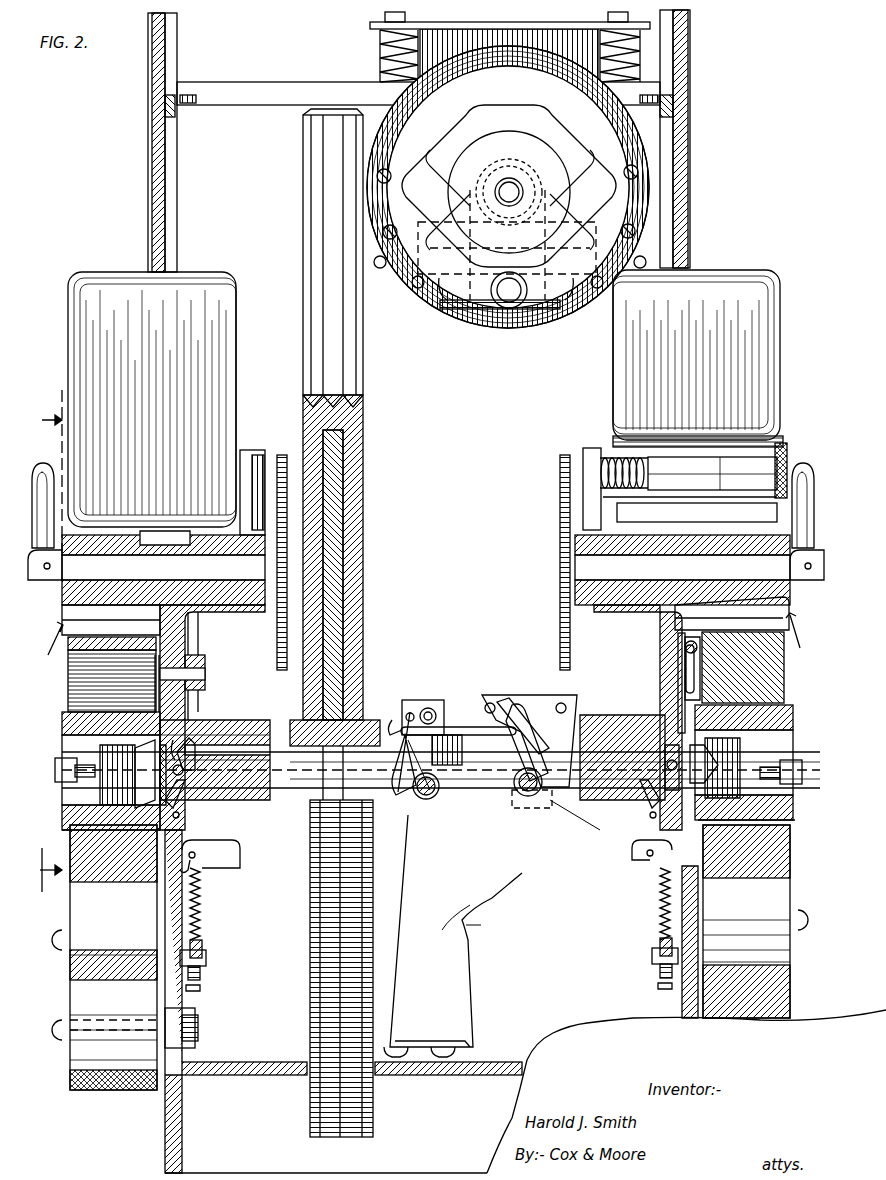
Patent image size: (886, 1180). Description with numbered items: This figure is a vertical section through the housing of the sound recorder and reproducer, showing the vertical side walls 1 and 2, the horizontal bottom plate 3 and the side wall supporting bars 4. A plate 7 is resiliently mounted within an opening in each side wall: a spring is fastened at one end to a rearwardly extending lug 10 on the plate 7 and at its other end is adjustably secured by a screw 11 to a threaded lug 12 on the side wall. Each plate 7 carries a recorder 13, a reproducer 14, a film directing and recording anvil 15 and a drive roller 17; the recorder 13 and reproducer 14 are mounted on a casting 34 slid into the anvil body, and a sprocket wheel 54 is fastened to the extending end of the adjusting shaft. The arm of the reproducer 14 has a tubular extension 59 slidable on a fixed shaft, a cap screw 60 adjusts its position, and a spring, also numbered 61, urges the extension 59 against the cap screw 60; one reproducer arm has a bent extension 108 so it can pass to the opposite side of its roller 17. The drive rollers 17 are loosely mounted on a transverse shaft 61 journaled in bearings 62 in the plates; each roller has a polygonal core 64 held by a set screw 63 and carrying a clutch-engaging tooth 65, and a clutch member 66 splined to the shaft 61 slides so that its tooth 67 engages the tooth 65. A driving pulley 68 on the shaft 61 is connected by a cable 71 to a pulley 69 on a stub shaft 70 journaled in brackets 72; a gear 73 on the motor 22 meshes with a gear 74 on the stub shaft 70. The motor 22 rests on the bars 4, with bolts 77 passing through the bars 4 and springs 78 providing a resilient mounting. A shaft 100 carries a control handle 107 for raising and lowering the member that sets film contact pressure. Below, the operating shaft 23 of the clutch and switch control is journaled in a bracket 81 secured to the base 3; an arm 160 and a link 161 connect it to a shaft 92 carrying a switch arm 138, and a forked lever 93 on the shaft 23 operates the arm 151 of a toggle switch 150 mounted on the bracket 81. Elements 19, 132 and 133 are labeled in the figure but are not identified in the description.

The side wall 1 is at (155, 158).
The side wall 2 is at (690, 142).
The bottom plate 3 is at (238, 1062).
The side wall supporting bars 4 is at (231, 82).
The plate 7 is at (186, 640).
The lug 10 is at (202, 852).
The screw 11 is at (200, 990).
The threaded lug 12 is at (204, 955).
The recorder 13 is at (160, 332).
The reproducer 14 is at (678, 676).
The anvil 15 is at (424, 643).
The drive roller 17 is at (62, 826).
The wheel 19 is at (70, 905).
The motor 22 is at (378, 188).
The operating shaft 23 is at (426, 800).
The casting 34 is at (252, 443).
The sprocket wheel 54 is at (282, 455).
The tubular extension 59 is at (684, 462).
The cap screw 60 is at (786, 440).
The shaft 61 is at (612, 456).
The bearings 62 is at (252, 730).
The set screw 63 is at (58, 776).
The polygonal core 64 is at (64, 738).
The clutch-engaging tooth 65 is at (140, 748).
The clutch member 66 is at (178, 722).
The tooth 67 is at (140, 806).
The driving pulley 68 is at (365, 536).
The pulley 69 is at (304, 232).
The stub shaft 70 is at (311, 280).
The cable 71 is at (364, 333).
The brackets 72 is at (442, 298).
The gear 73 is at (545, 185).
The gear 74 is at (555, 225).
The bolts 77 is at (628, 23).
The springs 78 is at (380, 56).
The bracket 81 is at (472, 903).
The shaft 92 is at (520, 792).
The forked lever 93 is at (436, 757).
The shaft 100 is at (78, 560).
The control handle 107 is at (43, 464).
The bent extension 108 is at (685, 658).
The bracket pivot 132 is at (490, 704).
The bracket pivot 133 is at (561, 703).
The switch arm 138 is at (520, 700).
The toggle switch 150 is at (440, 705).
The operating arm 151 is at (408, 712).
The arm 160 is at (520, 735).
The link 161 is at (458, 726).